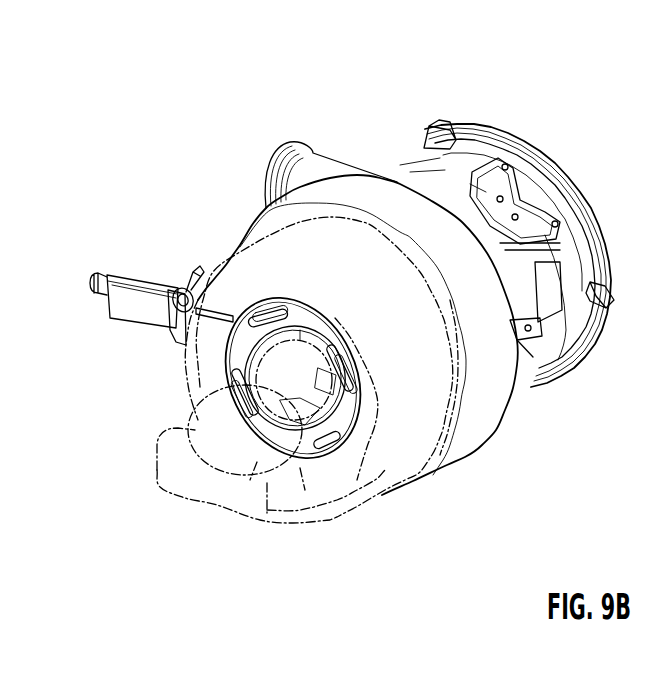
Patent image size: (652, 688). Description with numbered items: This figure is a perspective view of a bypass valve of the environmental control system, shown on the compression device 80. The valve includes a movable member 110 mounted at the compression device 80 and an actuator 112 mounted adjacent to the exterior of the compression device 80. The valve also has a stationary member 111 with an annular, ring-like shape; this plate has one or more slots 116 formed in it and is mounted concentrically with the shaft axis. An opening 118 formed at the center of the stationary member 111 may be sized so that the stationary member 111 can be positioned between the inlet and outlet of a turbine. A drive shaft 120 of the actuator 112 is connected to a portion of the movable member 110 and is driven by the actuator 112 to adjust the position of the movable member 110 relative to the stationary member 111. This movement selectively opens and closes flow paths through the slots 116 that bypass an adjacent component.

The compression device 80 is at (489, 117).
The movable member 110 is at (352, 388).
The stationary member 111 is at (305, 303).
The actuator 112 is at (150, 300).
The slots 116 is at (255, 308).
The opening 118 is at (297, 400).
The drive shaft 120 is at (227, 313).